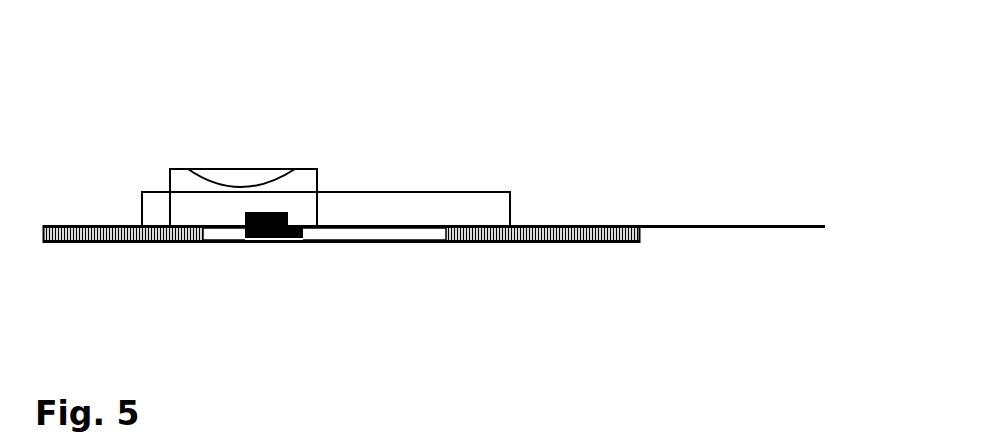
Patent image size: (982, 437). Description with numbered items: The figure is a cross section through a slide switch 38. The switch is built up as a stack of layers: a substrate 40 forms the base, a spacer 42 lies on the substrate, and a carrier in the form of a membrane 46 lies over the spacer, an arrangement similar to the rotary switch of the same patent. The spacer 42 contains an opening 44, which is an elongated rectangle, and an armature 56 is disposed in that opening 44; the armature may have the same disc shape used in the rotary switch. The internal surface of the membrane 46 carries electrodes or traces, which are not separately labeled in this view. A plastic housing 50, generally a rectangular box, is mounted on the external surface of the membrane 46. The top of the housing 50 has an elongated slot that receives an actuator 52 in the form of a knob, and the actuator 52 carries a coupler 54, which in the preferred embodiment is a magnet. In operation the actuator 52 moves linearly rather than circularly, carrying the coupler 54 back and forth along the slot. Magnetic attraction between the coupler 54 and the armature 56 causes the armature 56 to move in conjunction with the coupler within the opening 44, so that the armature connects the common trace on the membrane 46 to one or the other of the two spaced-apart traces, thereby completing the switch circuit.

The slide switch 38 is at (133, 255).
The substrate 40 is at (443, 260).
The spacer 42 is at (434, 218).
The opening 44 is at (205, 232).
The membrane 46 is at (377, 201).
The plastic housing 50 is at (427, 170).
The actuator 52 is at (395, 133).
The coupler 54 is at (464, 152).
The armature 56 is at (414, 265).